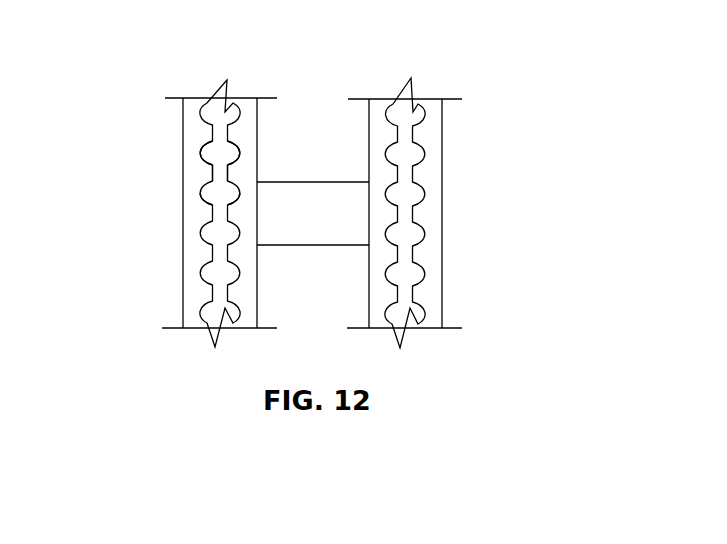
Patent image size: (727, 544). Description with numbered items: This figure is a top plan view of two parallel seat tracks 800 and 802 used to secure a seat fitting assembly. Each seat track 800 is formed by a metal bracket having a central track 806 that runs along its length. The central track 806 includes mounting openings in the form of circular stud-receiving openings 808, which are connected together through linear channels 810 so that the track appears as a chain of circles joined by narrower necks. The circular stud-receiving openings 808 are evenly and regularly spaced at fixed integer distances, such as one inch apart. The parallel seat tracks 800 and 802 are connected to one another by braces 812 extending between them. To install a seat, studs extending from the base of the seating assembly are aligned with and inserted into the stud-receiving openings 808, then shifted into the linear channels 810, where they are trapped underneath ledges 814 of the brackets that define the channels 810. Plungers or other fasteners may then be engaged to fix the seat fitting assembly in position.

The seat track 800 is at (189, 220).
The seat track 802 is at (434, 213).
The central track 806 is at (220, 140).
The circular stud-receiving opening 808 is at (224, 158).
The linear channel 810 is at (213, 172).
The brace 812 is at (320, 235).
The ledge 814 is at (205, 210).